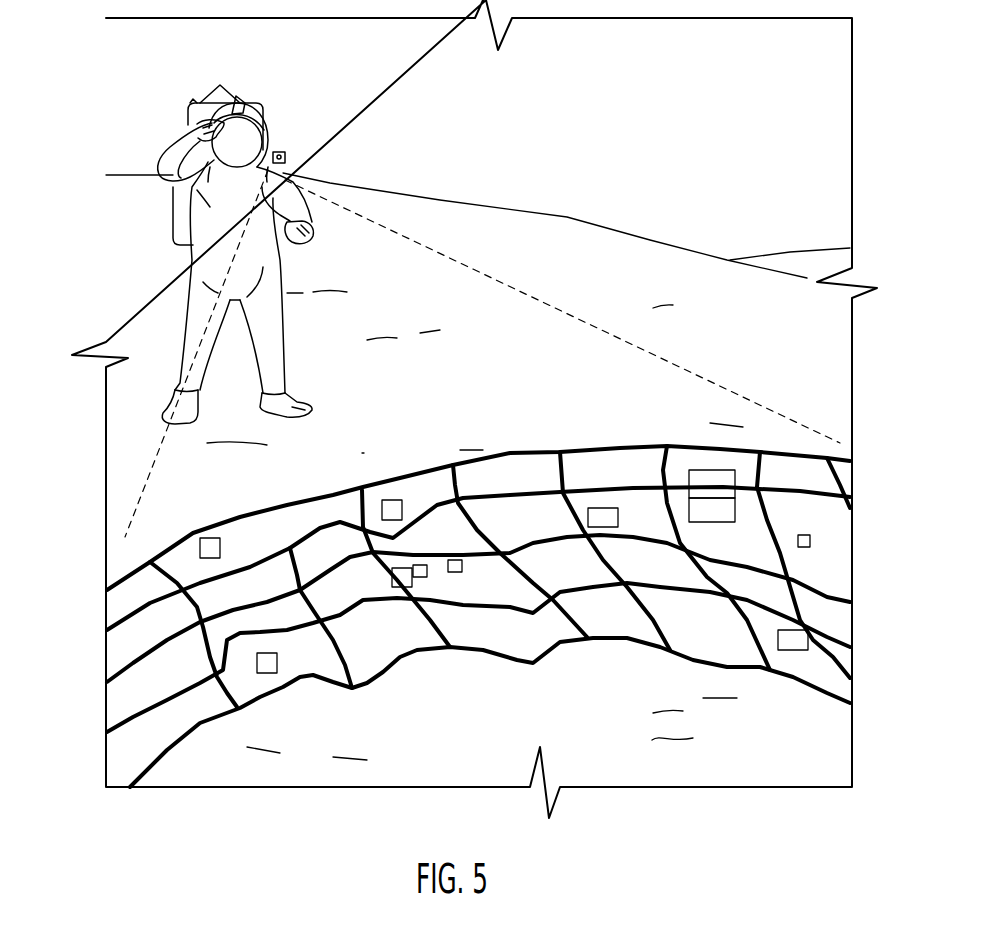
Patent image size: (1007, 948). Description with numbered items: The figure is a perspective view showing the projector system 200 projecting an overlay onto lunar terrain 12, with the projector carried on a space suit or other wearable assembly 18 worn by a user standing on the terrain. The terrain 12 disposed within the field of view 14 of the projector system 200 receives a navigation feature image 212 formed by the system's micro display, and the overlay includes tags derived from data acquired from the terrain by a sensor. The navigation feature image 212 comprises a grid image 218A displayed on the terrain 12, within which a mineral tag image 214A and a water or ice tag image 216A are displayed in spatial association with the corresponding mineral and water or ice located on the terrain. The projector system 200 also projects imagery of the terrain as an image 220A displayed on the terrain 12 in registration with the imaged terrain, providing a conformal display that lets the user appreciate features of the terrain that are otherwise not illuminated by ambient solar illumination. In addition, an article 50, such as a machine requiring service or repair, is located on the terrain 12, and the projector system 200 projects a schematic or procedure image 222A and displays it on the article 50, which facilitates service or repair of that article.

The terrain 12 is at (410, 407).
The field of view 14 is at (157, 442).
The space suit or other wearable assembly 18 is at (175, 218).
The projector system 200 is at (286, 107).
The navigation feature image 212 is at (512, 620).
The mineral tag image 214A is at (265, 673).
The water or ice tag image 216A is at (603, 527).
The grid image 218A is at (222, 693).
The image 220A is at (672, 740).
The schematic or procedure image 222A is at (730, 483).
The article 50 is at (718, 517).